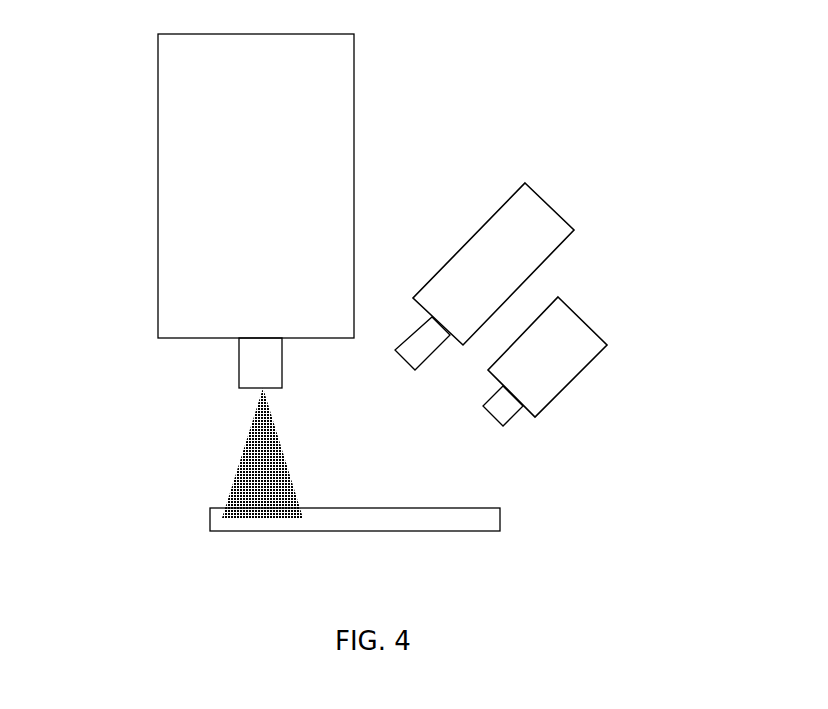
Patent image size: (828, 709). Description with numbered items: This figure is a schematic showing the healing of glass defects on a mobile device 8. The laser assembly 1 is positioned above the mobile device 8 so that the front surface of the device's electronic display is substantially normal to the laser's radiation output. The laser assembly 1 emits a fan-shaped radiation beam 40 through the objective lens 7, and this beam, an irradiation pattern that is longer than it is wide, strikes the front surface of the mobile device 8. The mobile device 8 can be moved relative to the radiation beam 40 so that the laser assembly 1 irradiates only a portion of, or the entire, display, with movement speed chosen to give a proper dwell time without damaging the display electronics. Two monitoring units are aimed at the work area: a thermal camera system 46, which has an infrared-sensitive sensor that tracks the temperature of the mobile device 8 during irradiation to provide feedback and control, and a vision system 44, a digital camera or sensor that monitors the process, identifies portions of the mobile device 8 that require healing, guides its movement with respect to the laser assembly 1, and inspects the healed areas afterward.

The laser assembly 1 is at (309, 133).
The objective lens 7 is at (232, 362).
The fan-shaped radiation beam 40 is at (237, 470).
The mobile device 8 is at (487, 516).
The thermal camera system 46 is at (522, 220).
The vision system 44 is at (577, 380).